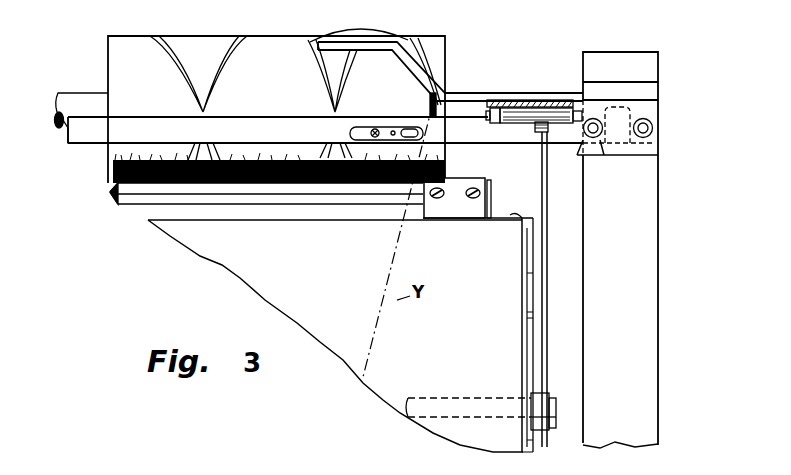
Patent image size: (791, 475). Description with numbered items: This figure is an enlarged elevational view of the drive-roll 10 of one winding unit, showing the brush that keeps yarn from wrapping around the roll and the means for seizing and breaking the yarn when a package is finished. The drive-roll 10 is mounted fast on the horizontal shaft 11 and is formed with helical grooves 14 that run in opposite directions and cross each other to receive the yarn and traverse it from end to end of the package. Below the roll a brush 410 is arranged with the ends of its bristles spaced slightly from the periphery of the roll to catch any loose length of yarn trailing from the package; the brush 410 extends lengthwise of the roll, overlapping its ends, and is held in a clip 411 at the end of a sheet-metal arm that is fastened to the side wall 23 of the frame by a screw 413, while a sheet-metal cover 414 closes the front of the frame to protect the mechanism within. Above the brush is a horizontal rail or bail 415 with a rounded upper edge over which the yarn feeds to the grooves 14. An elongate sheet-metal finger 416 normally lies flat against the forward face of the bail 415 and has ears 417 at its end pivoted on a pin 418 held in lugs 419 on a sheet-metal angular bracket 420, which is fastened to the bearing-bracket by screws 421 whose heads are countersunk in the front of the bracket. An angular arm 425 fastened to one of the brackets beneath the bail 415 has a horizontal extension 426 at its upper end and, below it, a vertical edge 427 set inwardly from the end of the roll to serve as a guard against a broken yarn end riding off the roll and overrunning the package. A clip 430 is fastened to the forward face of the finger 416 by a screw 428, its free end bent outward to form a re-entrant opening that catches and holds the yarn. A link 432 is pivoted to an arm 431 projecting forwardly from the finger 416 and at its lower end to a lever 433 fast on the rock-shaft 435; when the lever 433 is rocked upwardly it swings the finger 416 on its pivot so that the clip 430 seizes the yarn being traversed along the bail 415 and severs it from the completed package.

The drive-roll 10 is at (276, 40).
The horizontal shaft 11 is at (77, 98).
The helical grooves 14 is at (228, 60).
The side wall 23 is at (534, 357).
The brush 410 is at (140, 190).
The clip 411 is at (483, 212).
The screw 413 is at (532, 203).
The sheet-metal cover 414 is at (213, 265).
The bail 415 is at (137, 130).
The finger 416 is at (488, 136).
The ears 417 is at (490, 100).
The pin 418 is at (525, 97).
The lugs 419 is at (508, 128).
The angular bracket 420 is at (632, 150).
The screws 421 is at (653, 128).
The angular arm 425 is at (440, 90).
The horizontal extension 426 is at (377, 36).
The vertical edge 427 is at (430, 107).
The screw 428 is at (348, 138).
The clip 430 is at (388, 127).
The arm 431 is at (537, 134).
The link 432 is at (549, 292).
The lever 433 is at (557, 405).
The rock-shaft 435 is at (457, 400).